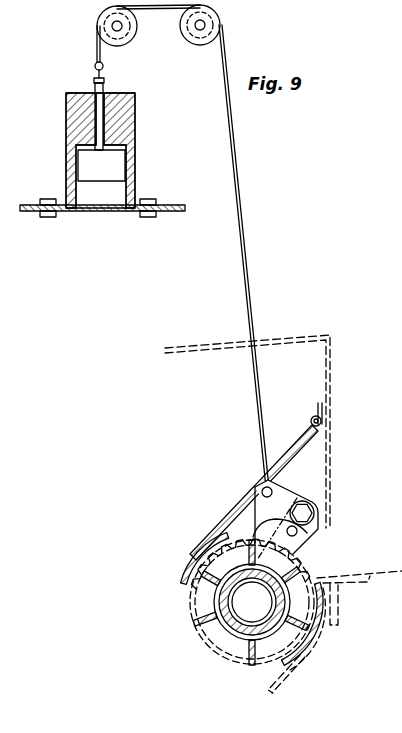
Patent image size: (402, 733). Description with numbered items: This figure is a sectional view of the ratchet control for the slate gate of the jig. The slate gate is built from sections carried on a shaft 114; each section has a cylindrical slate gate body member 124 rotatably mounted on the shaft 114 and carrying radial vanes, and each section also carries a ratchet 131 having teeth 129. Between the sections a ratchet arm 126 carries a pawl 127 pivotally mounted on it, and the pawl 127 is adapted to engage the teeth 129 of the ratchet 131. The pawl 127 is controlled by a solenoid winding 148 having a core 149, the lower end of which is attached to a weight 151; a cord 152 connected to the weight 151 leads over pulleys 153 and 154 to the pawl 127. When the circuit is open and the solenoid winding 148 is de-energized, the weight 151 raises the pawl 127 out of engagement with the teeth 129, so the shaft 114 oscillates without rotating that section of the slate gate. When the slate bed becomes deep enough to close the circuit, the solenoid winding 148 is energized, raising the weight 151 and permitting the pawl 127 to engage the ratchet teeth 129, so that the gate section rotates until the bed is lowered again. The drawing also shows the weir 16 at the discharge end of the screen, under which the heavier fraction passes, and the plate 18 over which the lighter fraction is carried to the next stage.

The weir 16 is at (331, 460).
The plate 18 is at (280, 336).
The shaft 114 is at (234, 664).
The slate gate body member 124 is at (212, 645).
The ratchet arm 126 is at (205, 622).
The pawl 127 is at (262, 489).
The ratchet teeth 129 is at (296, 550).
The ratchet 131 is at (198, 607).
The solenoid winding 148 is at (126, 110).
The core 149 is at (95, 88).
The weight 151 is at (117, 167).
The cord 152 is at (97, 55).
The pulley 153 is at (126, 36).
The pulley 154 is at (200, 37).